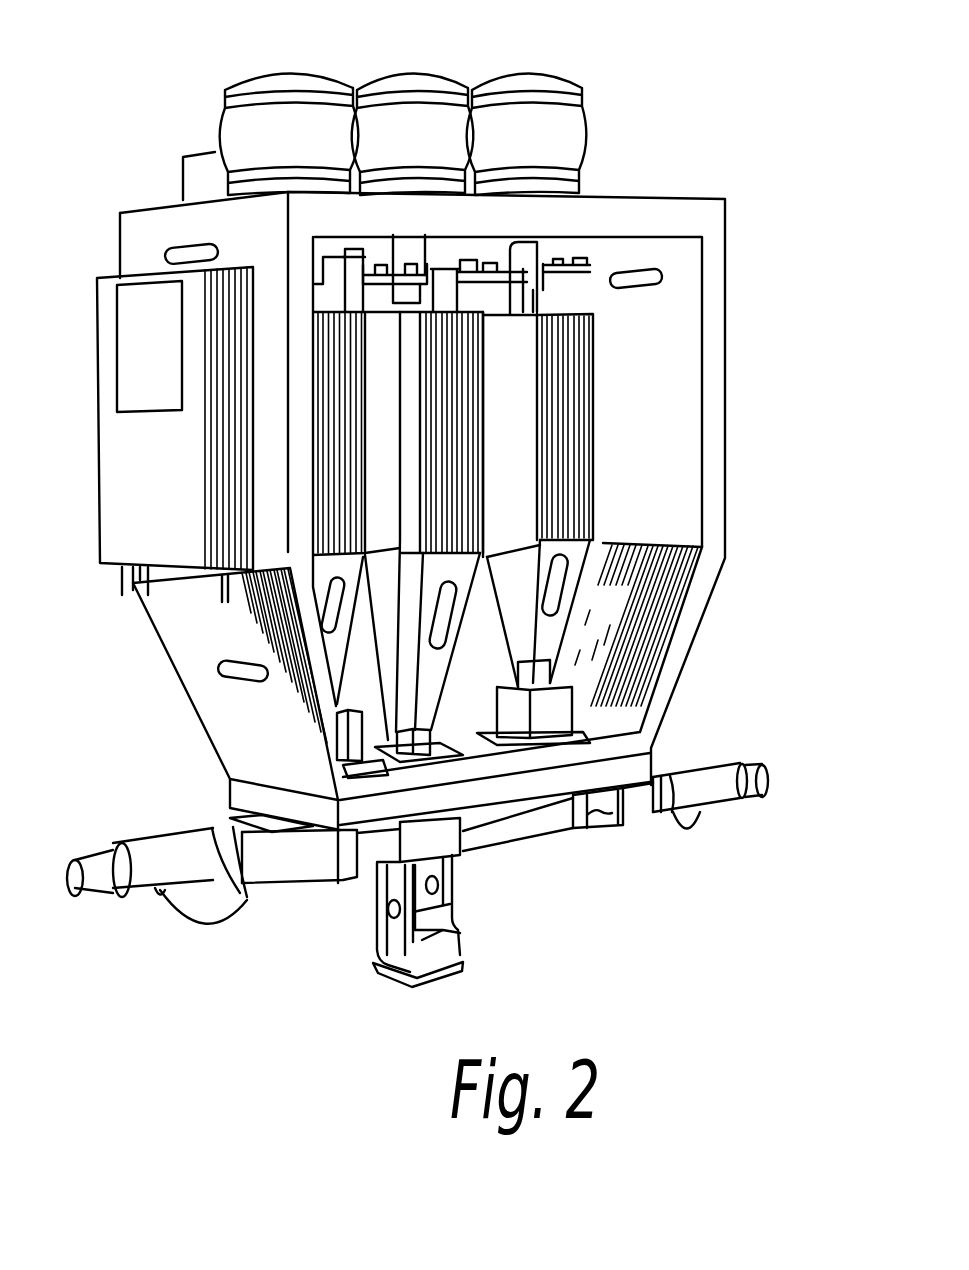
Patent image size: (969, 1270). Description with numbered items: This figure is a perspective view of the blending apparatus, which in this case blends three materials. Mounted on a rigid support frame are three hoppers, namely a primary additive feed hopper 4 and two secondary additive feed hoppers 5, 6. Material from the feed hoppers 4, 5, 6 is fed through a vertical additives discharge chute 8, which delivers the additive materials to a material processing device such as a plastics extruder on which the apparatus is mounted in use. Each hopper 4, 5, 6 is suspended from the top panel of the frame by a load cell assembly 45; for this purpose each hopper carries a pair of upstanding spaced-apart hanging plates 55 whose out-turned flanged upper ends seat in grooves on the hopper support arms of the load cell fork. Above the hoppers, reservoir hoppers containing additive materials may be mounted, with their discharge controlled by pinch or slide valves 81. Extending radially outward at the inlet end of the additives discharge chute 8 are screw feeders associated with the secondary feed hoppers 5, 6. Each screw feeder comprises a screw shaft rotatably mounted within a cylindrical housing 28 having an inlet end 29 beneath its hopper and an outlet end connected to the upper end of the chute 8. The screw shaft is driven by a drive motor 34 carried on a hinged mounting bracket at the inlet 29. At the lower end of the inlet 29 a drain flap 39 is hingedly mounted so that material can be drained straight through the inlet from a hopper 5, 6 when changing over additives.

The pinch or slide valve 81 is at (382, 113).
The load cell assembly 45 is at (563, 253).
The hanging plate 55 is at (555, 290).
The secondary additive feed hopper 6 is at (575, 386).
The primary additive feed hopper 4 is at (458, 504).
The secondary additive feed hopper 5 is at (323, 448).
The drive motor 34 is at (750, 775).
The inlet end 29 is at (294, 885).
The cylindrical housing 28 is at (528, 818).
The drain flap 39 is at (605, 832).
The additives discharge chute 8 is at (470, 895).